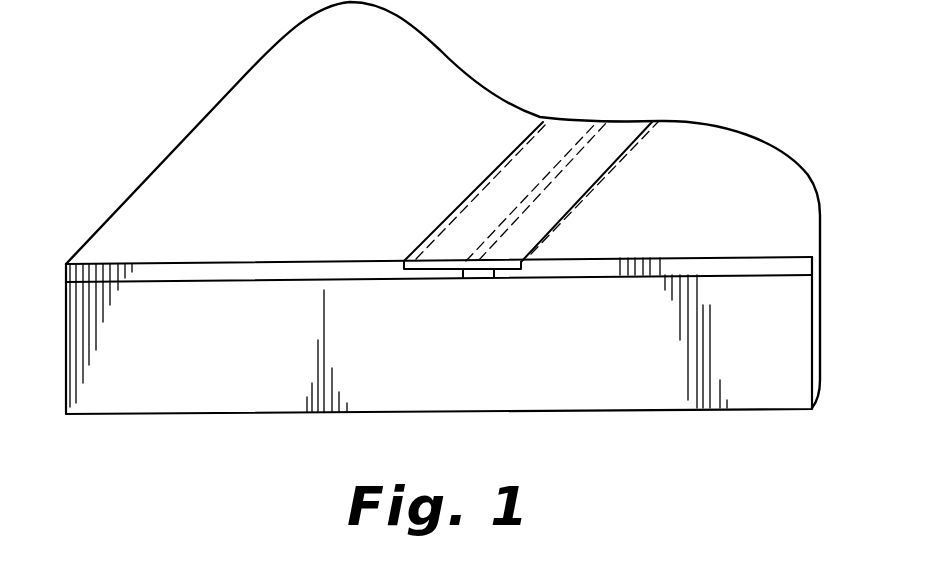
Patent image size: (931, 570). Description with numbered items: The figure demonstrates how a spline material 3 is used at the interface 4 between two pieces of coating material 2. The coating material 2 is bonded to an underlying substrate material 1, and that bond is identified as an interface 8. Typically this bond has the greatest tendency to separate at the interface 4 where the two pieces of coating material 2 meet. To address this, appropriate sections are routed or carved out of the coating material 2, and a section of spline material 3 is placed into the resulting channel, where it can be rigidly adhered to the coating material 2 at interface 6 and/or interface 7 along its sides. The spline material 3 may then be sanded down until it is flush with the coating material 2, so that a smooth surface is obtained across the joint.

The substrate material 1 is at (147, 393).
The coating material 2 is at (207, 140).
The spline material 3 is at (604, 143).
The interface 4 is at (463, 277).
The interface 6 is at (400, 262).
The interface 7 is at (494, 277).
The interface 8 is at (716, 277).